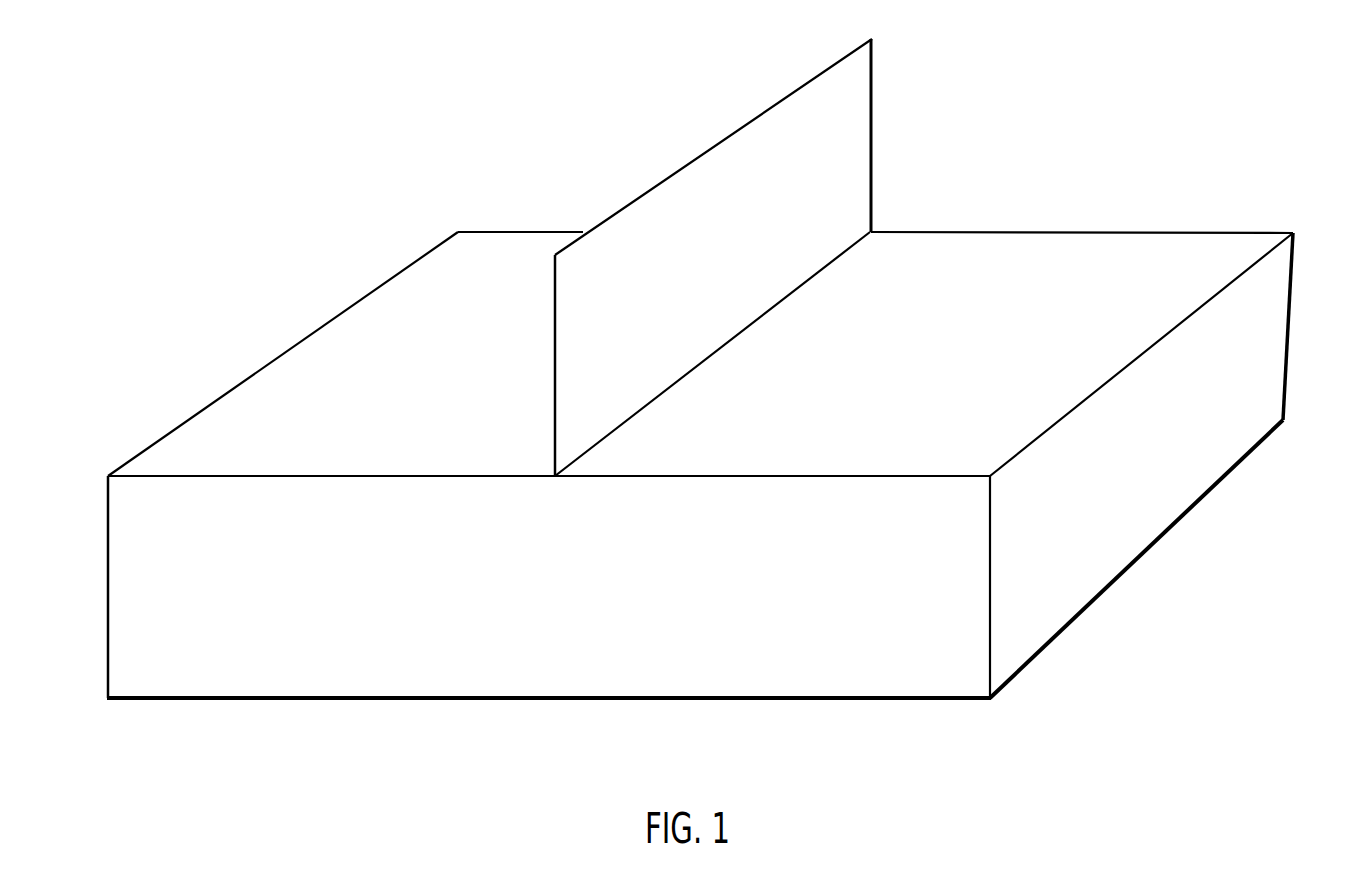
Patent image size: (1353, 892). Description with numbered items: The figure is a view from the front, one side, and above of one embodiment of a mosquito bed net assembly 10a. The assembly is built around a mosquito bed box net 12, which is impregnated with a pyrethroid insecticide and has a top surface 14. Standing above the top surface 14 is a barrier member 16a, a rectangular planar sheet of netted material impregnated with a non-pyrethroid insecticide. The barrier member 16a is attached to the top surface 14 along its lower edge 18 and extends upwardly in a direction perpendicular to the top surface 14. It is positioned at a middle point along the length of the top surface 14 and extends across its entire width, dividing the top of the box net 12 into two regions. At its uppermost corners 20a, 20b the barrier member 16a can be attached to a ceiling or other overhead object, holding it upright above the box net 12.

The mosquito bed net assembly 10a is at (362, 181).
The mosquito bed box net 12 is at (615, 643).
The top surface 14 is at (318, 377).
The barrier member 16a is at (673, 247).
The lower edge 18 is at (730, 340).
The uppermost corner 20a is at (555, 255).
The uppermost corner 20b is at (872, 40).